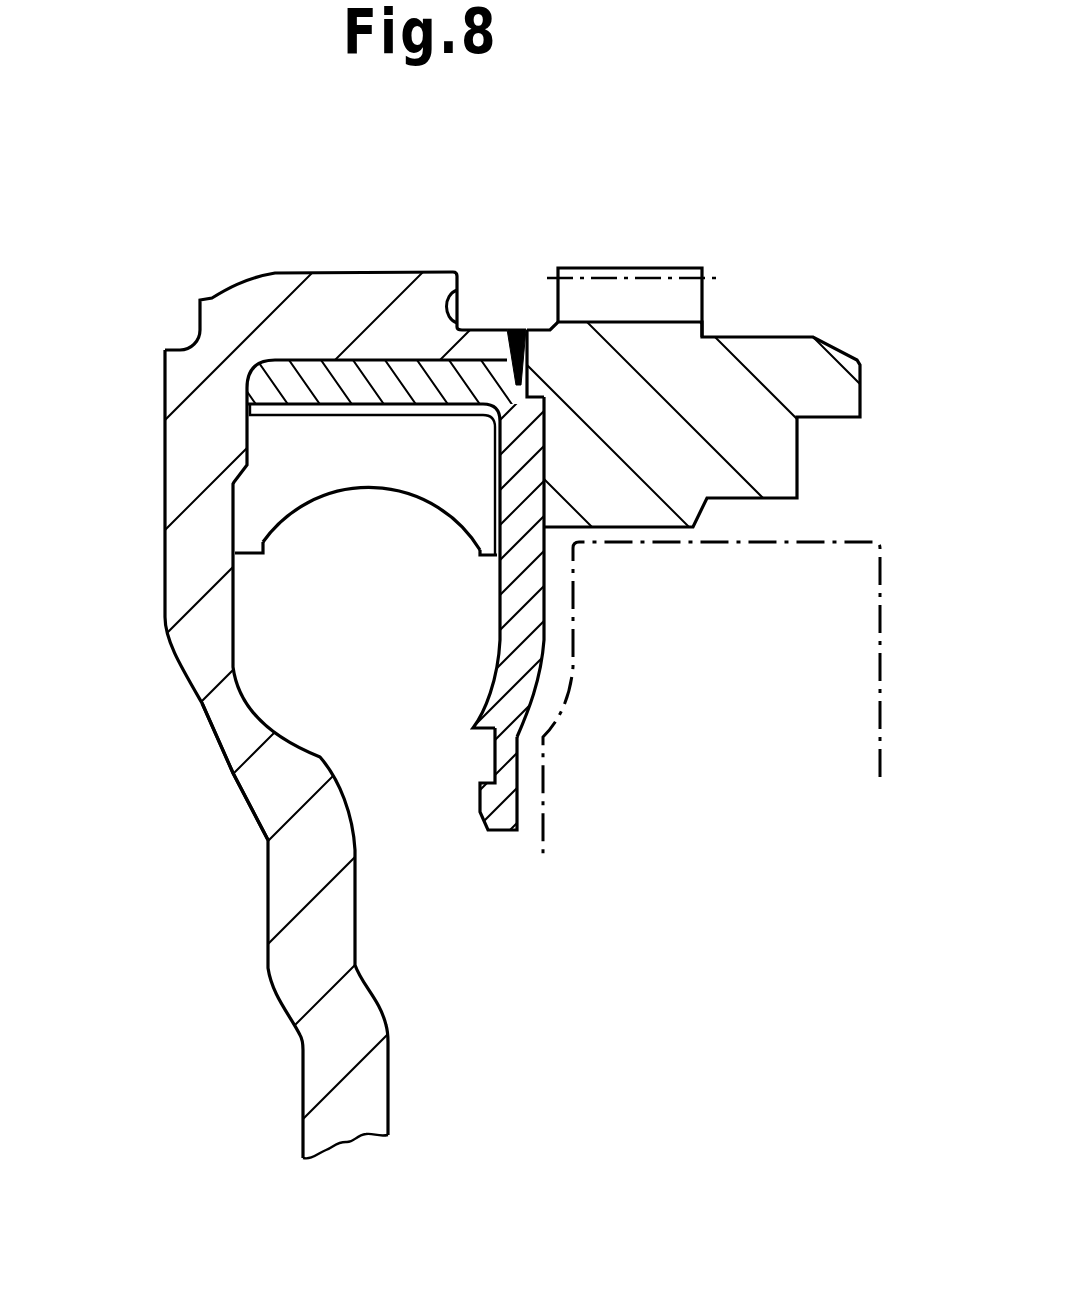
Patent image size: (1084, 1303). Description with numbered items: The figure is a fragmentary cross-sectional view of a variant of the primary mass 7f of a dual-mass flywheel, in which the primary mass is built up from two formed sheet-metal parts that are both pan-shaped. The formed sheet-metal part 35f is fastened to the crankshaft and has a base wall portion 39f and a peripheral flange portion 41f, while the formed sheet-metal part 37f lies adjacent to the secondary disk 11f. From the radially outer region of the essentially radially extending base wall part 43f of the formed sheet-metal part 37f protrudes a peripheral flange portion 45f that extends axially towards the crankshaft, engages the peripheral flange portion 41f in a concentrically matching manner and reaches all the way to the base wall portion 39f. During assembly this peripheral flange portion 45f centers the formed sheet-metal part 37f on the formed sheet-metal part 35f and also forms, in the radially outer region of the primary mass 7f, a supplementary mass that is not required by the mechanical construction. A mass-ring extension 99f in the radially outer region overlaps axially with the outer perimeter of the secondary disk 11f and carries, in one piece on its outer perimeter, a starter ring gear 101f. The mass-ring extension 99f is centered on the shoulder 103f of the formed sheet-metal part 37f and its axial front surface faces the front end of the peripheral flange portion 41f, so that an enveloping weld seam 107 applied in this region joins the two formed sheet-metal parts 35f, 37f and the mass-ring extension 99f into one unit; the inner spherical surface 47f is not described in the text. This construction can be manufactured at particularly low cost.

The primary mass 7f is at (542, 718).
The secondary disk 11f is at (864, 542).
The formed sheet-metal part 35f is at (232, 767).
The formed sheet-metal part 37f is at (524, 737).
The base wall portion 39f is at (205, 662).
The peripheral flange portion 41f is at (312, 307).
The base wall part 43f is at (551, 597).
The peripheral flange portion 45f is at (418, 380).
The inner spherical surface 47f is at (347, 552).
The mass-ring extension 99f is at (805, 376).
The starter ring gear 101f is at (666, 296).
The shoulder 103f is at (534, 402).
The weld seam 107 is at (517, 327).